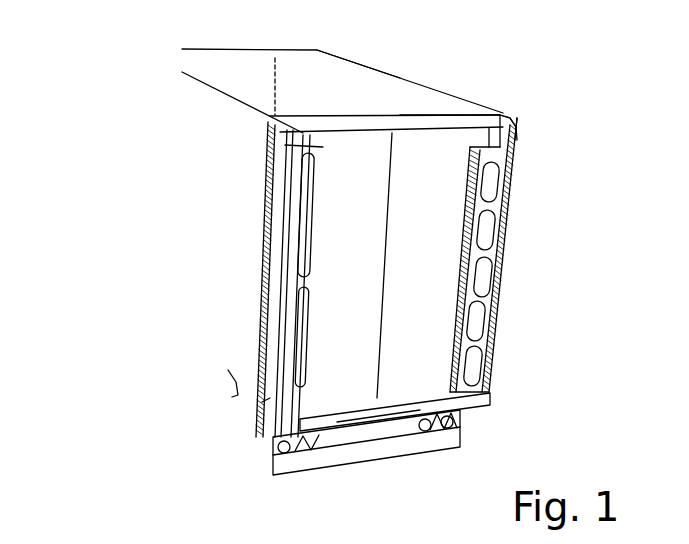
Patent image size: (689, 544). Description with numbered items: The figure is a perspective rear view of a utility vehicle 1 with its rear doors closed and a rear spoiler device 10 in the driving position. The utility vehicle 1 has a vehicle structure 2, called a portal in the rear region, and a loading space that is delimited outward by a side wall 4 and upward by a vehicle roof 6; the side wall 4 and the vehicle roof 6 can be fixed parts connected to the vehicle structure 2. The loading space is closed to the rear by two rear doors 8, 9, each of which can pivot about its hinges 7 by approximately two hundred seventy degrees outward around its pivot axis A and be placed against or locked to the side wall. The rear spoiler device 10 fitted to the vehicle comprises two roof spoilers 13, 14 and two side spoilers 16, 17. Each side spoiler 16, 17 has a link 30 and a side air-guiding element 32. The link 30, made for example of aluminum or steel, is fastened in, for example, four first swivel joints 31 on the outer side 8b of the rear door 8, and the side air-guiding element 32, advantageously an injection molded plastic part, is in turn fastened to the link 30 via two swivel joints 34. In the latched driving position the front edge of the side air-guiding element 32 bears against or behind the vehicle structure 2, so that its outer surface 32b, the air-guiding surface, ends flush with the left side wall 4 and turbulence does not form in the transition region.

The utility vehicle 1 is at (91, 455).
The vehicle structure 2 is at (507, 111).
The side wall 4 is at (182, 335).
The vehicle roof 6 is at (384, 72).
The hinge 7 is at (266, 183).
The rear door 8 is at (322, 147).
The outer side of the rear door 8b is at (271, 437).
The rear door 9 is at (453, 148).
The rear spoiler device 10 is at (535, 127).
The roof spoiler 13 is at (340, 117).
The roof spoiler 14 is at (462, 116).
The side spoiler 16 is at (262, 242).
The side spoiler 17 is at (513, 207).
The link 30 is at (303, 220).
The first swivel joint 31 is at (300, 337).
The side air-guiding element 32 is at (280, 271).
The outer surface 32b is at (262, 402).
The swivel joint 34 is at (199, 393).
The pivot axis A is at (273, 63).